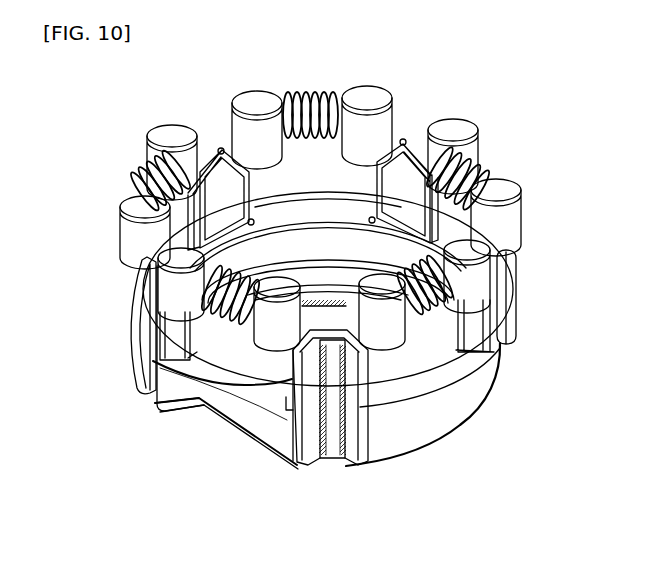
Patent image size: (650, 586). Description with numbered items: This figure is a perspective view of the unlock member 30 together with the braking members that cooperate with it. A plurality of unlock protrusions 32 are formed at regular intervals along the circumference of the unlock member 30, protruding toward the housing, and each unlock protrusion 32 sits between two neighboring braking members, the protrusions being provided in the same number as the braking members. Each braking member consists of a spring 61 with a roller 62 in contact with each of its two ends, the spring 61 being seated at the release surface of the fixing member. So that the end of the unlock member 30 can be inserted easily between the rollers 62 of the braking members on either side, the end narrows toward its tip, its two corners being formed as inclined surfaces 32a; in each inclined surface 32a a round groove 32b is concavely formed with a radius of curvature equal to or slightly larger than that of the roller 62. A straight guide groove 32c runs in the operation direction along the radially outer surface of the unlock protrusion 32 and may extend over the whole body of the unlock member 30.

The unlock member 30 is at (458, 405).
The unlock protrusion 32 is at (305, 390).
The inclined surface 32a is at (285, 362).
The round groove 32b is at (262, 386).
The guide groove 32c is at (336, 372).
The spring 61 is at (150, 334).
The roller 62 is at (202, 348).